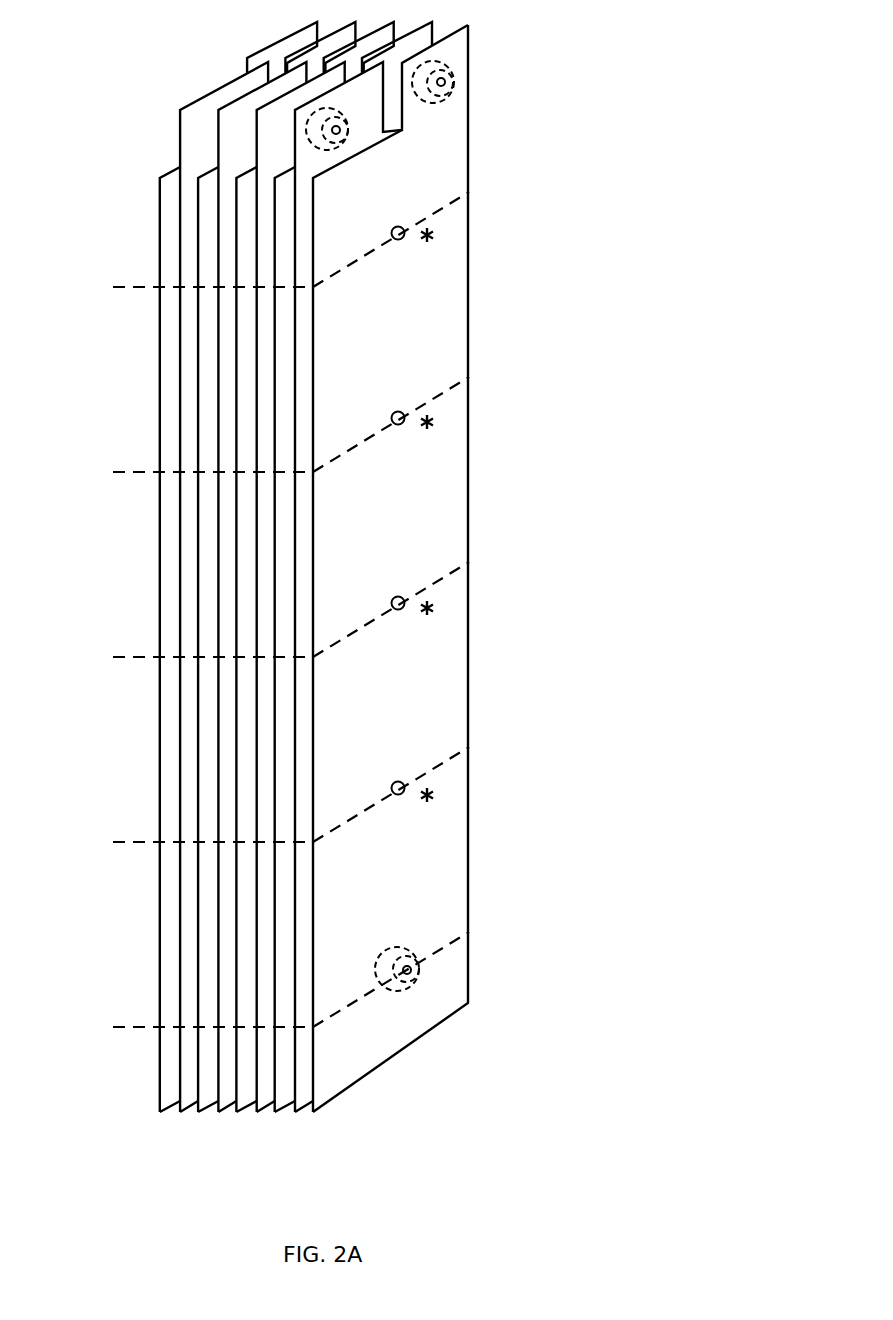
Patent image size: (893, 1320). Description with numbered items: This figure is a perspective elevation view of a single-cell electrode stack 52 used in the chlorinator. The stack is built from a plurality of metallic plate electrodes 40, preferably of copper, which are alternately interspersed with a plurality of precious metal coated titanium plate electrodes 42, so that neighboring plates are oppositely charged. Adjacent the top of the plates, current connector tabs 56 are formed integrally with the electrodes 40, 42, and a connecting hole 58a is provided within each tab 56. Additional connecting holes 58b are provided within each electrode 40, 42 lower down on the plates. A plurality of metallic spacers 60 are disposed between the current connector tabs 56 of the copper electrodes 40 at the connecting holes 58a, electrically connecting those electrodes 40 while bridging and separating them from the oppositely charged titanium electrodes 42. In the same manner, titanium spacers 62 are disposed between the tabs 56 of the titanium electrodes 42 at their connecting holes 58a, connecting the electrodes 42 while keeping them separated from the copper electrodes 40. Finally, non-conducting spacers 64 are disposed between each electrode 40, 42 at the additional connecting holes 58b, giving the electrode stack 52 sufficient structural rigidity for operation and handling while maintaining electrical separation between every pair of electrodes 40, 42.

The metallic plate electrode 40 is at (433, 455).
The precious metal coated titanium plate electrode 42 is at (177, 157).
The single-cell electrode stack 52 is at (416, 567).
The current connector tab 56 is at (198, 148).
The connecting hole 58a is at (445, 82).
The additional connecting hole 58b is at (396, 413).
The metallic spacer 60 is at (452, 65).
The titanium spacer 62 is at (345, 130).
The non-conducting spacer 64 is at (412, 947).